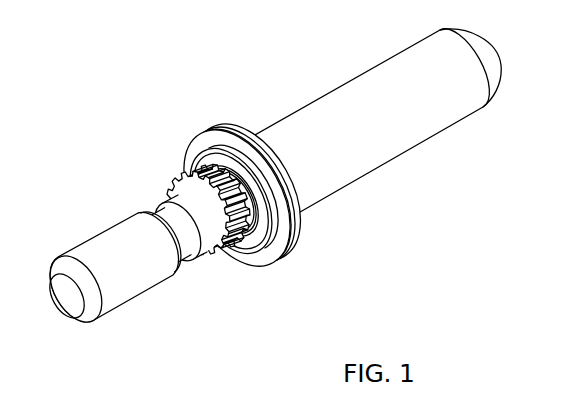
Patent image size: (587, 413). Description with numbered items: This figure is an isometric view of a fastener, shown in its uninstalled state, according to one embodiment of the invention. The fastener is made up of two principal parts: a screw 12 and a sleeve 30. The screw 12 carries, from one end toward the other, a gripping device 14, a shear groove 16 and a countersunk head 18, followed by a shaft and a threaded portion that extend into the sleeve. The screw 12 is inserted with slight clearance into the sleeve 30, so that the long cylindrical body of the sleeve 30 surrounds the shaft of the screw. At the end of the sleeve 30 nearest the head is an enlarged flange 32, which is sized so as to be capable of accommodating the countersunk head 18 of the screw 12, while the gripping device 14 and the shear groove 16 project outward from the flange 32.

The screw 12 is at (140, 176).
The gripping device 14 is at (113, 240).
The shear groove 16 is at (244, 218).
The countersunk head 18 is at (229, 160).
The sleeve 30 is at (383, 97).
The enlarged flange 32 is at (275, 242).